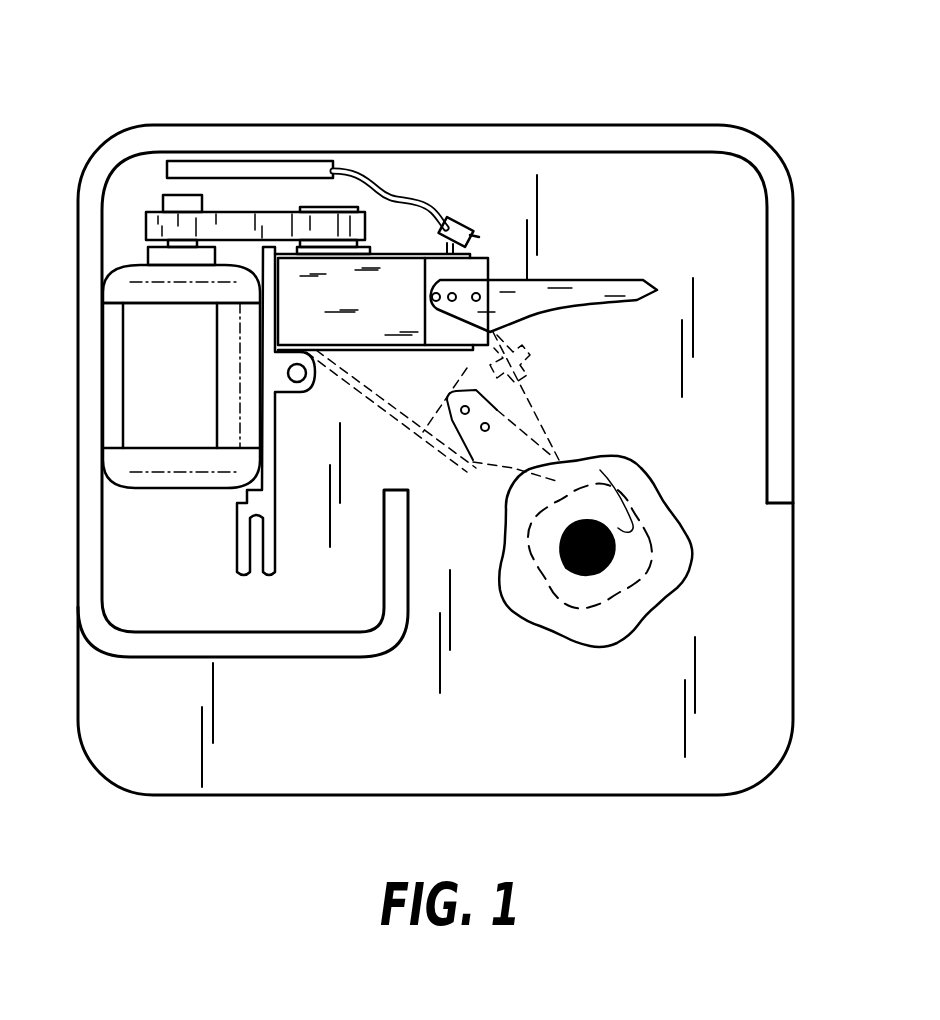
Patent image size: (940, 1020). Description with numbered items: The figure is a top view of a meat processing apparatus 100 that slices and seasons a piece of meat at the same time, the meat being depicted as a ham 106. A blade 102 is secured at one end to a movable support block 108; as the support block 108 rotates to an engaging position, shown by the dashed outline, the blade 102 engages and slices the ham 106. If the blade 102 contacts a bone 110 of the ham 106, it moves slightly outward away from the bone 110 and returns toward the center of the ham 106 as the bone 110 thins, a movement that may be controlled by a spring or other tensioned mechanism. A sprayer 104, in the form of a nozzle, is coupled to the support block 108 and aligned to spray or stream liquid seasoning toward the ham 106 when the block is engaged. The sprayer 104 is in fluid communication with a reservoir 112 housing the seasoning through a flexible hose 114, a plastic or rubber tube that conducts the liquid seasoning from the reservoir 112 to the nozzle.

The meat processing apparatus 100 is at (818, 113).
The blade 102 is at (638, 285).
The sprayer 104 is at (473, 238).
The ham 106 is at (637, 625).
The movable support block 108 is at (413, 347).
The bone 110 is at (585, 572).
The reservoir 112 is at (265, 170).
The flexible hose 114 is at (400, 195).